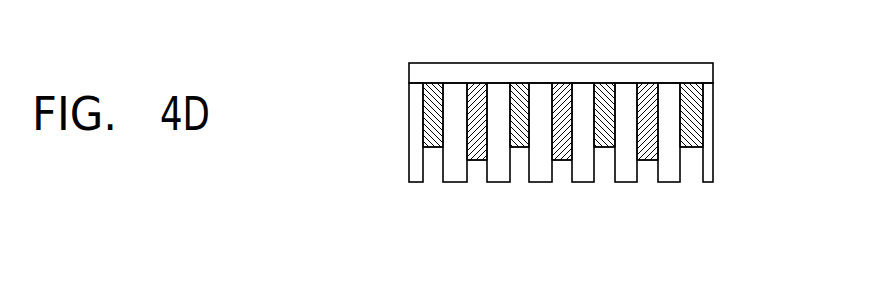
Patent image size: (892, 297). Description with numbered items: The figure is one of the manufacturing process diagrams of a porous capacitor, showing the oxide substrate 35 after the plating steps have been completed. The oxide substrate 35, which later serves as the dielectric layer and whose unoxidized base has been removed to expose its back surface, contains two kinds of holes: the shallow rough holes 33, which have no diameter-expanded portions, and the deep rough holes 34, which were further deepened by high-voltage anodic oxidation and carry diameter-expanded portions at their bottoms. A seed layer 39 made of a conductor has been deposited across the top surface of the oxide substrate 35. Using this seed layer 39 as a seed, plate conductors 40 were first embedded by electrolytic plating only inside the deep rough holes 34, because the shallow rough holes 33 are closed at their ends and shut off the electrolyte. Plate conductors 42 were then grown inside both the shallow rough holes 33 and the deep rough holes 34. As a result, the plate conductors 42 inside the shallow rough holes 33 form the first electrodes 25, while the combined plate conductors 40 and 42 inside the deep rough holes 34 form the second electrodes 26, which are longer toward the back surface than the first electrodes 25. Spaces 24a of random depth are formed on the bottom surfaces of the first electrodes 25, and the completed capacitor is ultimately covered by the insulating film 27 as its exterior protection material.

The insulating film 27 is at (560, 137).
The seed layer 39 is at (713, 75).
The oxide substrate 35 is at (714, 157).
The space 24a is at (422, 184).
The shallow rough hole 33 is at (434, 87).
The deep rough hole 34 is at (473, 101).
The plate conductor 40 is at (549, 84).
The plate conductor 42 is at (565, 207).
The first electrode 25 is at (442, 184).
The second electrode 26 is at (480, 163).